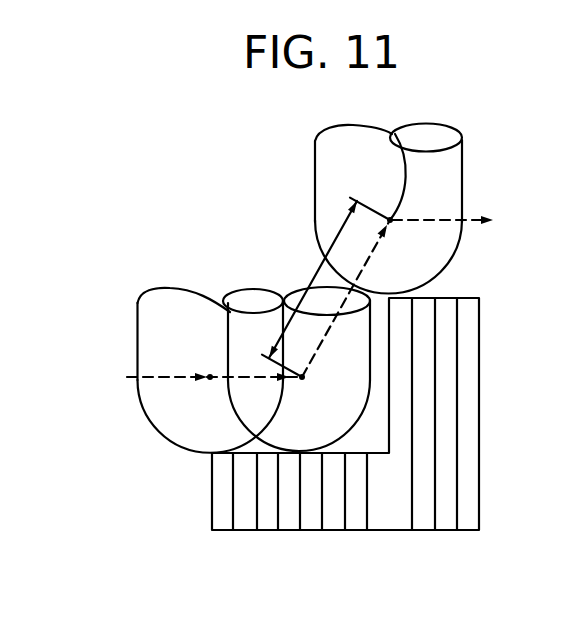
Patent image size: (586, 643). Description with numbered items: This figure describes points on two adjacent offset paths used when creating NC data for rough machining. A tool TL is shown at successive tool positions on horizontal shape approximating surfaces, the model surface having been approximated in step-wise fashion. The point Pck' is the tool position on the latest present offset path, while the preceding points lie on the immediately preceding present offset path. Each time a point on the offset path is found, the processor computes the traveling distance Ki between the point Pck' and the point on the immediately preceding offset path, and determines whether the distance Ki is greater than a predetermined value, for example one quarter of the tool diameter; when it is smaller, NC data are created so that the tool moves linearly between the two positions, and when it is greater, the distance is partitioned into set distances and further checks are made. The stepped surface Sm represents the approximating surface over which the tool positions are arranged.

The tool (ball end mill) TL is at (462, 179).
The tool position on the next horizontal shape approximating surface Pck' is at (440, 157).
The traveling distance Ki is at (326, 287).
The m-th surface (machined surface section) Sm is at (467, 298).